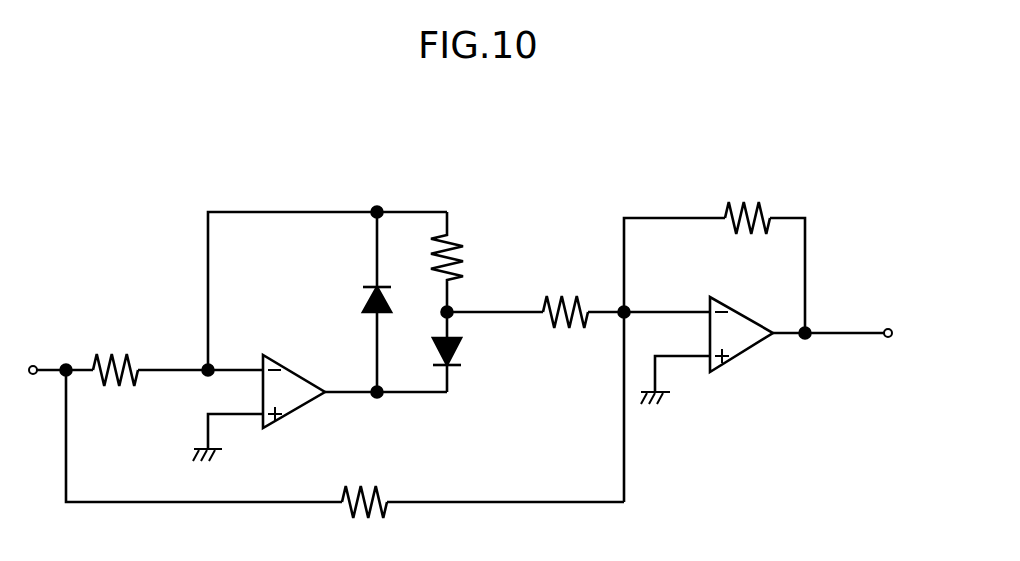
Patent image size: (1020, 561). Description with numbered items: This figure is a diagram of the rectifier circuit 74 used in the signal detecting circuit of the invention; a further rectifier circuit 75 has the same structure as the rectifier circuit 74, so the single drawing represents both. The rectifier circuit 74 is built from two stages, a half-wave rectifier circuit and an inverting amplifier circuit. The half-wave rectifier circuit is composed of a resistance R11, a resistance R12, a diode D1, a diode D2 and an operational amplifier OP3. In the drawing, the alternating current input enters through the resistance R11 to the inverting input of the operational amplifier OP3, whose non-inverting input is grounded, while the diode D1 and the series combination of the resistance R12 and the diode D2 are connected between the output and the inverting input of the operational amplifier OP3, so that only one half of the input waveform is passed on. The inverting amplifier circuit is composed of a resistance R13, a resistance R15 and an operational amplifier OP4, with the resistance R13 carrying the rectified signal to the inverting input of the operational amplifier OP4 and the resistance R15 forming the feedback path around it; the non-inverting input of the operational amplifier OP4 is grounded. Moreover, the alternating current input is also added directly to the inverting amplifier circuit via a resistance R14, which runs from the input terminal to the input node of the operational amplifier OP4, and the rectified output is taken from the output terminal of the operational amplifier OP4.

The rectifier circuit 74 is at (217, 183).
The rectifier circuit 75 is at (460, 343).
The resistance R11 is at (116, 351).
The resistance R12 is at (472, 262).
The resistance R13 is at (567, 294).
The resistance R14 is at (367, 485).
The resistance R15 is at (748, 201).
The diode D1 is at (356, 302).
The diode D2 is at (470, 352).
The operational amplifier OP3 is at (306, 399).
The operational amplifier OP4 is at (754, 339).